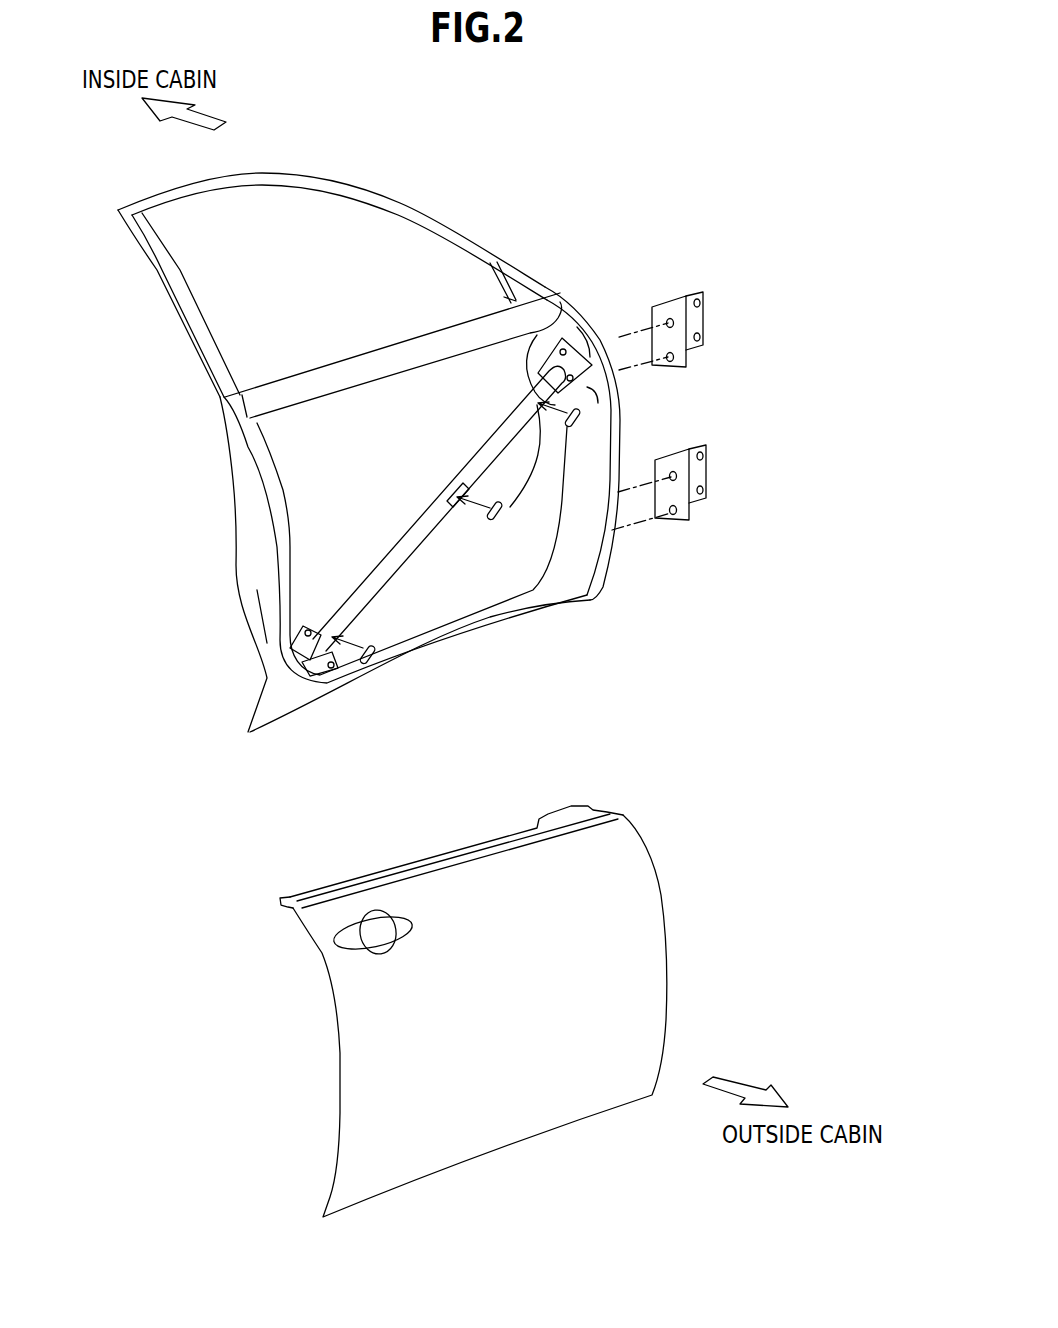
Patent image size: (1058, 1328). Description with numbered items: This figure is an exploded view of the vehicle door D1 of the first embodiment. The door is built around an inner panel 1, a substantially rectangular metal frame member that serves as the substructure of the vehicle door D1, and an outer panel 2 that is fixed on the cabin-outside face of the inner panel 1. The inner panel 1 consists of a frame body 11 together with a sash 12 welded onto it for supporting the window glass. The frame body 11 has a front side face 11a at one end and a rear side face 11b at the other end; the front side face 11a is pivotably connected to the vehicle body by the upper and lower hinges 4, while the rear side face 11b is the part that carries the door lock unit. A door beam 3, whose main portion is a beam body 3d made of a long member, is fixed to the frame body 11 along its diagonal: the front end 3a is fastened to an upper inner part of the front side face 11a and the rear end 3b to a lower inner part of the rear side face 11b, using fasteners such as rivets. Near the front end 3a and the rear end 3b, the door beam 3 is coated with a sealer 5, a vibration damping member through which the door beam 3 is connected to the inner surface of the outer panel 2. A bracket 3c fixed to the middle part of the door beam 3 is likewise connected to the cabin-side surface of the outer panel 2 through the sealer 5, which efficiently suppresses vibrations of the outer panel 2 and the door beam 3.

The vehicle door D1 is at (473, 167).
The inner panel 1 is at (582, 282).
The outer panel 2 is at (520, 1157).
The door beam 3 is at (437, 556).
The front end 3a is at (573, 357).
The rear end 3b is at (327, 677).
The bracket 3c is at (438, 503).
The beam body 3d is at (393, 557).
The hinges 4 is at (703, 317).
The sealer 5 is at (580, 427).
The frame body 11 is at (243, 467).
The front side face 11a is at (621, 422).
The rear side face 11b is at (243, 563).
The sash 12 is at (160, 287).